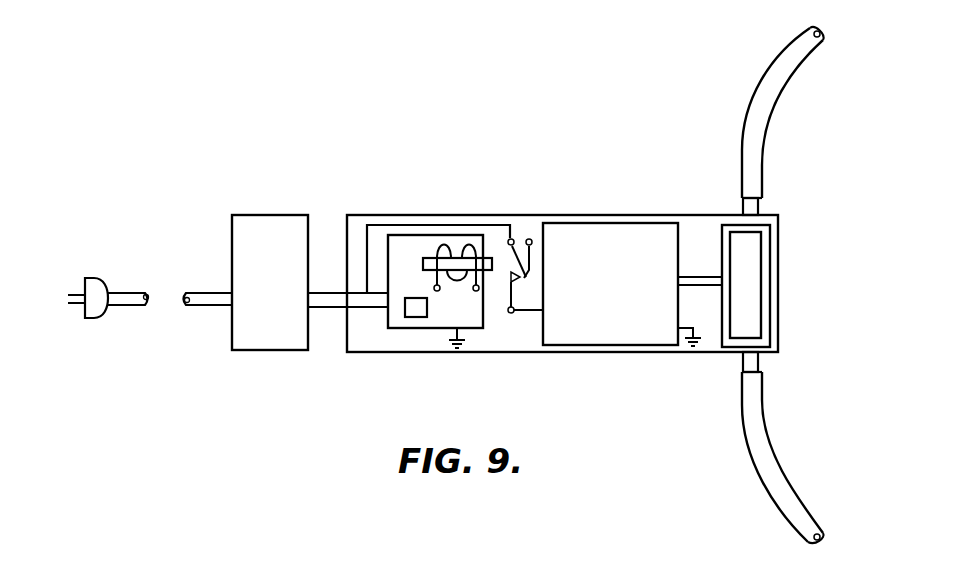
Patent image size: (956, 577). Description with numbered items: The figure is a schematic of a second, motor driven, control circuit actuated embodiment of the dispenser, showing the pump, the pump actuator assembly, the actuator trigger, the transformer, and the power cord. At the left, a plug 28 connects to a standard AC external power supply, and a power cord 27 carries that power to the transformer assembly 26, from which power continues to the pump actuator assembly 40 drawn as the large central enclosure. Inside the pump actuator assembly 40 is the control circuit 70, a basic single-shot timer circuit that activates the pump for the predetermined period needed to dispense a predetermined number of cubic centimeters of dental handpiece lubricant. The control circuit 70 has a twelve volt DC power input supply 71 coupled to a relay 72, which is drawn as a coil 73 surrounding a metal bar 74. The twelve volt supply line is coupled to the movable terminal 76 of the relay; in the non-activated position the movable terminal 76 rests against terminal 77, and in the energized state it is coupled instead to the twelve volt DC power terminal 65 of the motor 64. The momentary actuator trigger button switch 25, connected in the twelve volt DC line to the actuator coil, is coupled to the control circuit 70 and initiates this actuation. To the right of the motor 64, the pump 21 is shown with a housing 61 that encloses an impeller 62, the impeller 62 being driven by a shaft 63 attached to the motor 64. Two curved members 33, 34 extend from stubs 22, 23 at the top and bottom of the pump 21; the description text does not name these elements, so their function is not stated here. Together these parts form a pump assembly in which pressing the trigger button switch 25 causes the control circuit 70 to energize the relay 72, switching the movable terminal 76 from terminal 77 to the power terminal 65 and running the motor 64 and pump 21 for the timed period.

The pump 21 is at (692, 232).
The upper arm stub 22 is at (760, 212).
The lower arm stub 23 is at (760, 360).
The momentary actuator trigger button switch 25 is at (405, 307).
The transformer assembly 26 is at (270, 215).
The power cord 27 is at (126, 293).
The plug 28 is at (95, 278).
The upper arm 33 is at (792, 84).
The lower arm 34 is at (780, 462).
The pump actuator assembly 40 is at (412, 340).
The housing 61 is at (770, 262).
The impeller 62 is at (747, 307).
The shaft 63 is at (700, 287).
The motor 64 is at (590, 346).
The 12VDC power terminal 65 is at (508, 293).
The control circuit 70 is at (383, 258).
The 12VDC power input supply 71 is at (378, 224).
The relay 72 is at (447, 225).
The coil 73 is at (465, 253).
The metal bar 74 is at (422, 262).
The movable terminal 76 is at (523, 253).
The terminal 77 is at (532, 258).